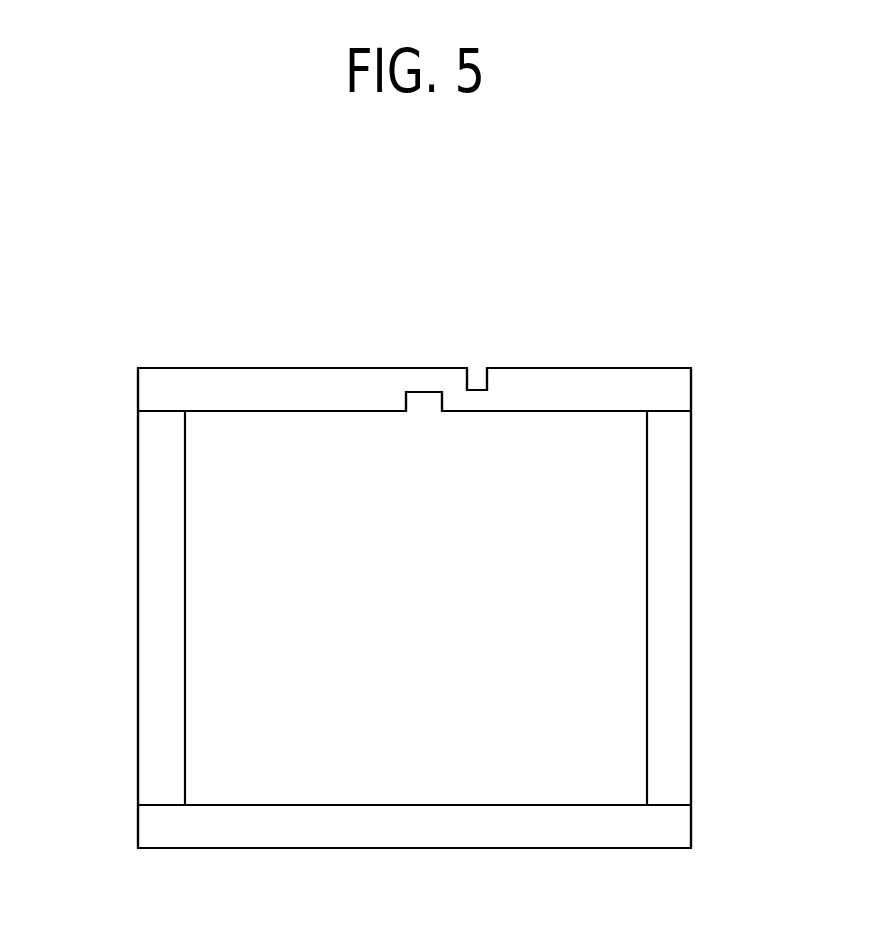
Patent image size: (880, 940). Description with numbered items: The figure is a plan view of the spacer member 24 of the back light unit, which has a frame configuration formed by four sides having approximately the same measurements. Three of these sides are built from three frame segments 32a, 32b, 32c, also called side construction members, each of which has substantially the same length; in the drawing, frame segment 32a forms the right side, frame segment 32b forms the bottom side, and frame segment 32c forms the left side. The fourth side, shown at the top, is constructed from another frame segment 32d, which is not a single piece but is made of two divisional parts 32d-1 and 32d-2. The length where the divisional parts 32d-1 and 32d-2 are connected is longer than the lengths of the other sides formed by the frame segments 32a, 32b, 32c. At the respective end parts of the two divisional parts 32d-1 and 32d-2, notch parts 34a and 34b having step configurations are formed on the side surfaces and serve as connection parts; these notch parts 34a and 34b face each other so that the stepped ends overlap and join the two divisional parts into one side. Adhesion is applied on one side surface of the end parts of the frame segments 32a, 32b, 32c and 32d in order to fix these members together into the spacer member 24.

The spacer member 24 is at (291, 264).
The frame segment 32d is at (335, 367).
The divisional part 32d-1 is at (547, 411).
The divisional part 32d-2 is at (303, 397).
The notch part 34a is at (480, 390).
The notch part 34b is at (420, 393).
The frame segment 32a is at (691, 555).
The frame segment 32b is at (400, 834).
The frame segment 32c is at (152, 562).